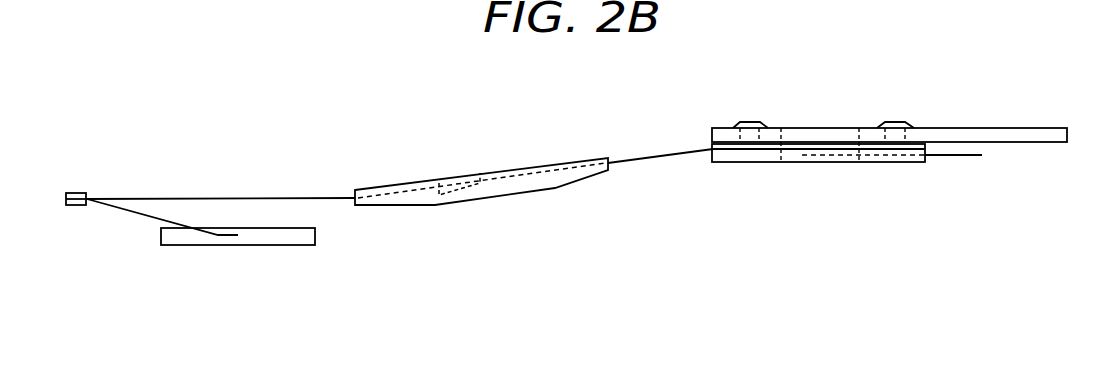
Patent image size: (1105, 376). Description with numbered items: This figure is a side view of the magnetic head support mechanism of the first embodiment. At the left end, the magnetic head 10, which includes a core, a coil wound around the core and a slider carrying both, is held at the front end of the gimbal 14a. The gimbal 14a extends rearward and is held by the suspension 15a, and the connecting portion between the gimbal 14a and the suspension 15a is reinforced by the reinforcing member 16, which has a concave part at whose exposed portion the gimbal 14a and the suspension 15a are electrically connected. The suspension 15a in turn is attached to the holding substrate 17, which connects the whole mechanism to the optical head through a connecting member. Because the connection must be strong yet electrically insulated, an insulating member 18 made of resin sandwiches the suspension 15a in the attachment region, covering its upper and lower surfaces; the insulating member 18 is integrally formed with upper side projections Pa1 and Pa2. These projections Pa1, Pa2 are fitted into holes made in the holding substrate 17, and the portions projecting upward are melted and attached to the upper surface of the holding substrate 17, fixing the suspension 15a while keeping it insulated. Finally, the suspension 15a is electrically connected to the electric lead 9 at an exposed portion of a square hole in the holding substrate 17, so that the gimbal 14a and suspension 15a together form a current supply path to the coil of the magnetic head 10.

The electric lead 9 is at (958, 162).
The magnetic head 10 is at (185, 235).
The gimbal 14a is at (263, 199).
The suspension 15a is at (652, 157).
The reinforcing member 16 is at (500, 187).
The holding substrate 17 is at (1027, 137).
The insulating member 18 is at (762, 157).
The upper side projection Pa1 is at (750, 122).
The upper side projection Pa2 is at (898, 122).